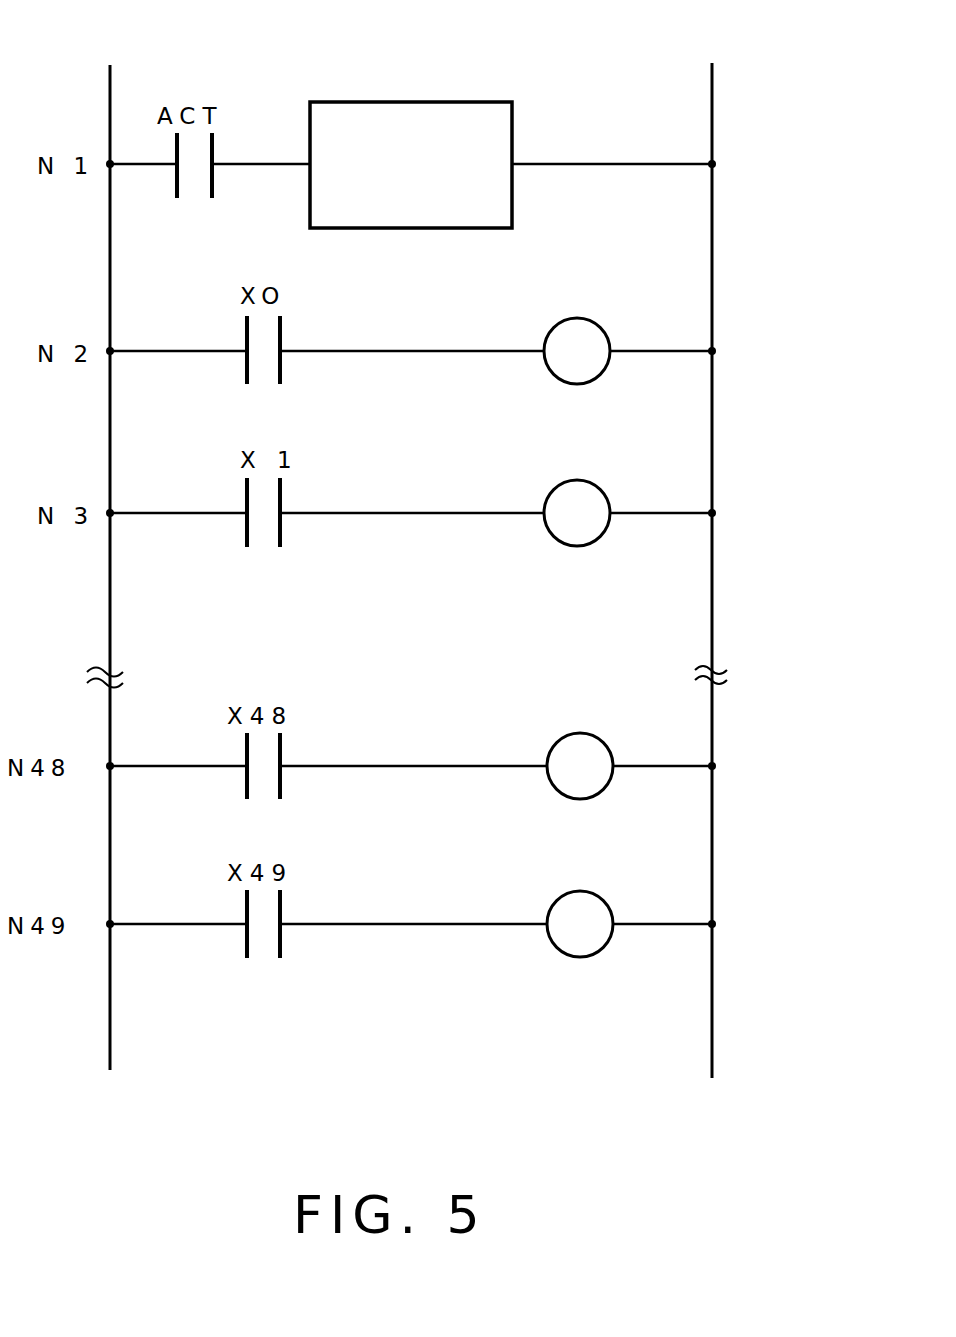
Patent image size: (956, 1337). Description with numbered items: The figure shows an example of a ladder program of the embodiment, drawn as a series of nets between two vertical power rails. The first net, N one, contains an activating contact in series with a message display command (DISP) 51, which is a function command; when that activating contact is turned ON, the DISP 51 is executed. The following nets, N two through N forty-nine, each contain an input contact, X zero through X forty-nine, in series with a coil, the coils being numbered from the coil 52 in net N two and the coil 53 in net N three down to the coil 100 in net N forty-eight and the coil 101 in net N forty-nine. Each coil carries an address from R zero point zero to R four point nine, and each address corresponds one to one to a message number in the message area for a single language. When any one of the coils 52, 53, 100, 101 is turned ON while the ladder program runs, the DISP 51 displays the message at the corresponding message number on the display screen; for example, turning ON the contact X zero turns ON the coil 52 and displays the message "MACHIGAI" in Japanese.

The message display command (DISP) 51 is at (405, 102).
The coil 52 is at (612, 330).
The coil 53 is at (615, 495).
The coil 100 is at (613, 750).
The coil 101 is at (613, 907).